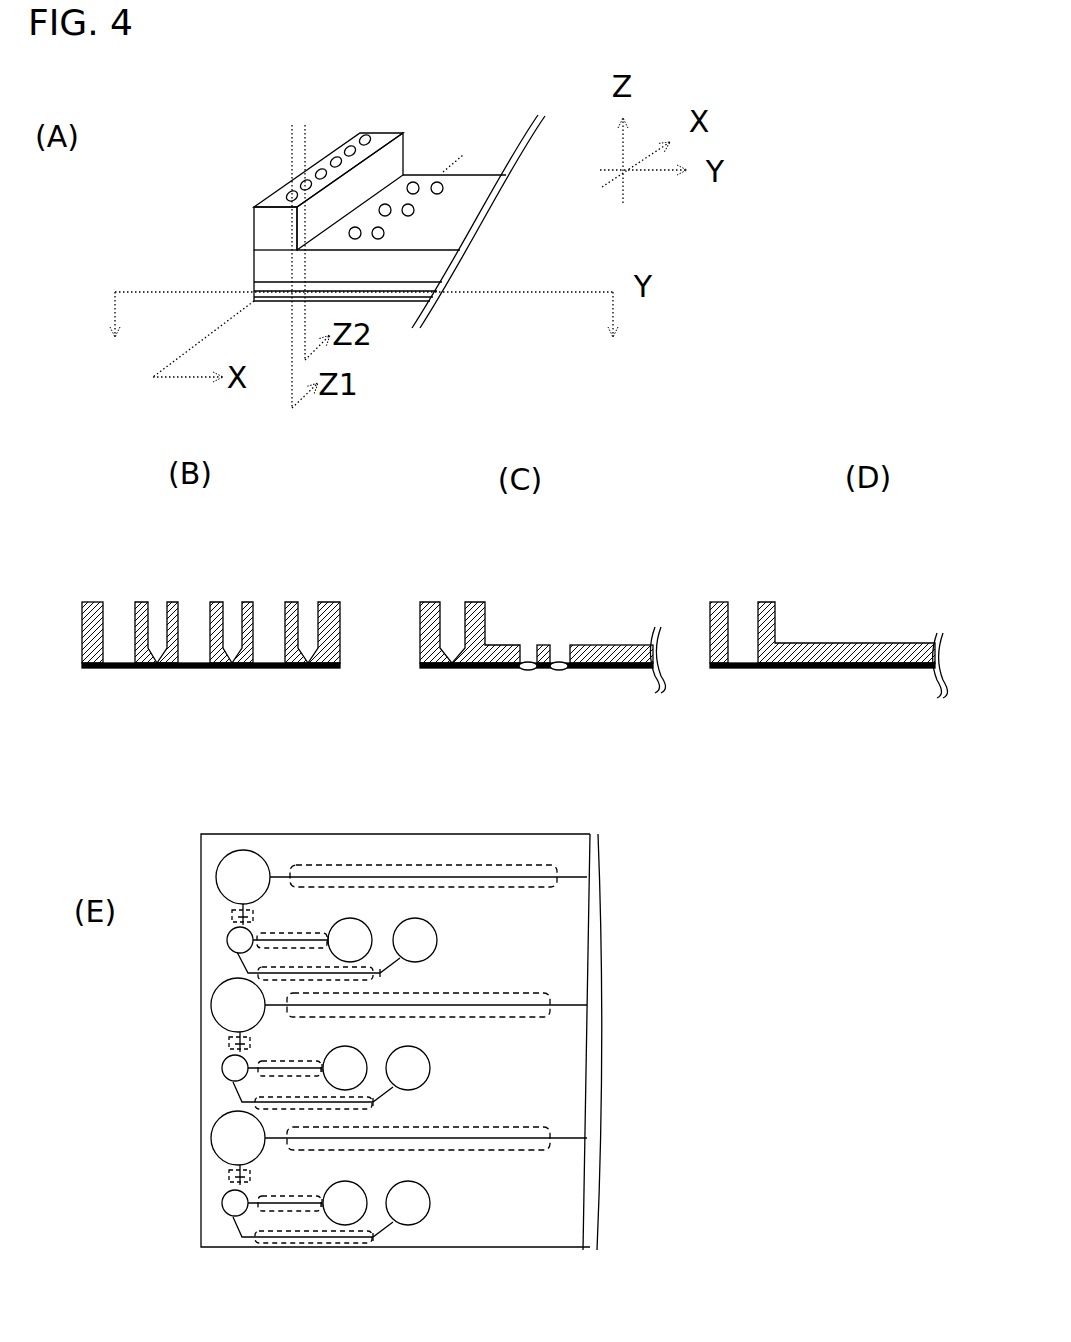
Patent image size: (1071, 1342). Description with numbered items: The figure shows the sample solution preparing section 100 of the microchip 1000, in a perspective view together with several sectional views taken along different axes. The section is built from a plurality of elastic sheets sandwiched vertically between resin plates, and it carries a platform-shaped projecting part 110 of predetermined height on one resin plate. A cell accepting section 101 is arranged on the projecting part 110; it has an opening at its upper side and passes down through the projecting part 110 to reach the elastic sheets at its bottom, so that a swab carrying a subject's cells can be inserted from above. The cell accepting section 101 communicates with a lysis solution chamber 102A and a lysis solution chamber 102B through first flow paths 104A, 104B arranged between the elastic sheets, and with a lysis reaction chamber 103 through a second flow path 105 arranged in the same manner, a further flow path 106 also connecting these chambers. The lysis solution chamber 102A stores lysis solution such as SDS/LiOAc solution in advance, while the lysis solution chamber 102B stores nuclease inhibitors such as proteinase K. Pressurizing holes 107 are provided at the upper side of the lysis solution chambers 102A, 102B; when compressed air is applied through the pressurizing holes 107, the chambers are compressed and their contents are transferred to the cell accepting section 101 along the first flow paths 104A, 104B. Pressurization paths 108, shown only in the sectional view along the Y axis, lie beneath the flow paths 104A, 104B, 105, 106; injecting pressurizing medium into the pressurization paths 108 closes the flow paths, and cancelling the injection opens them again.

The microchip 1000 is at (255, 172).
The projecting part 110 is at (254, 230).
The sample solution preparing section 100 is at (440, 435).
The cell accepting section 101 is at (153, 598).
The lysis solution chamber 102A is at (523, 673).
The lysis solution chamber 102B is at (567, 675).
The lysis reaction chamber 103 is at (277, 678).
The first flow path 104A is at (490, 670).
The first flow path 104B is at (390, 1237).
The second flow path 105 is at (147, 673).
The flow path 106 is at (858, 677).
The pressurizing hole 107 is at (268, 598).
The pressurization path 108 is at (247, 1177).